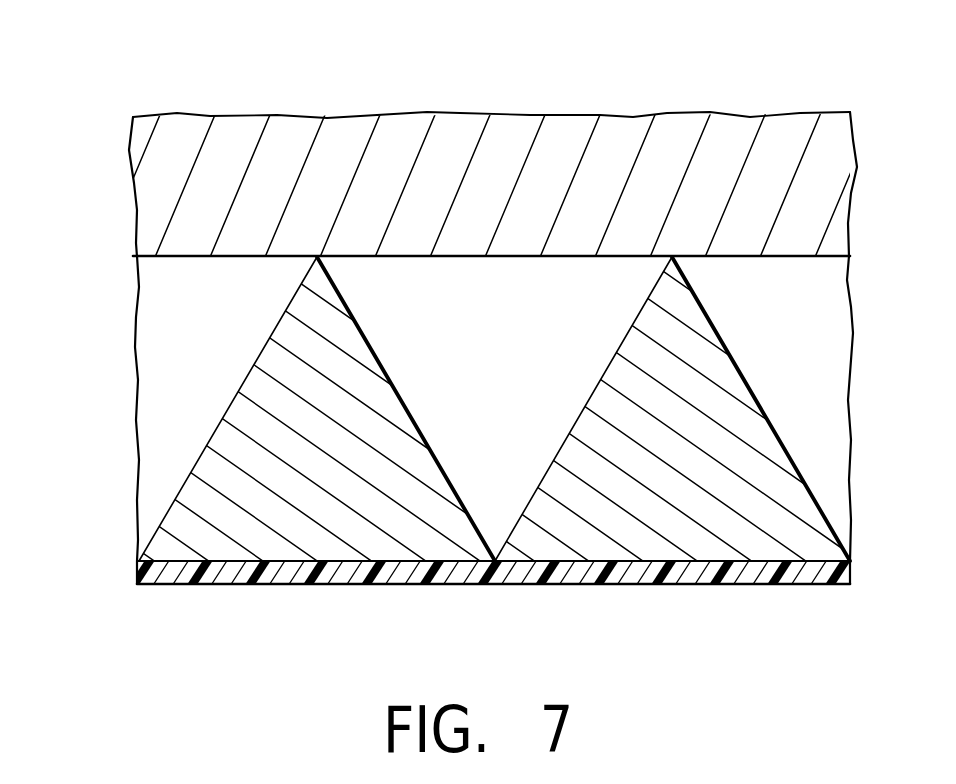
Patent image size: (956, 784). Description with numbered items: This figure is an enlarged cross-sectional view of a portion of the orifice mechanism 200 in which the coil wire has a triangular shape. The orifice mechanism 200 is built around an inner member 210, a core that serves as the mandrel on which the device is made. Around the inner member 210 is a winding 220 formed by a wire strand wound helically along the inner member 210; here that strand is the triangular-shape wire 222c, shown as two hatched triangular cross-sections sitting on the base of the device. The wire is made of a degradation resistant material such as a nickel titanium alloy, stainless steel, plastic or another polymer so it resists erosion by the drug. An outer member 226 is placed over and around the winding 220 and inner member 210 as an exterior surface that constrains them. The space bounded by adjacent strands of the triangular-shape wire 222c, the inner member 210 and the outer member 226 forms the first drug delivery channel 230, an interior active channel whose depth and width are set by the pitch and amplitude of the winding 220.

The orifice mechanism 200 is at (474, 392).
The inner member 210 is at (143, 167).
The winding 220 is at (481, 392).
The triangular-shape wire 222c is at (223, 443).
The outer member 226 is at (548, 585).
The first drug delivery channel 230 is at (492, 467).